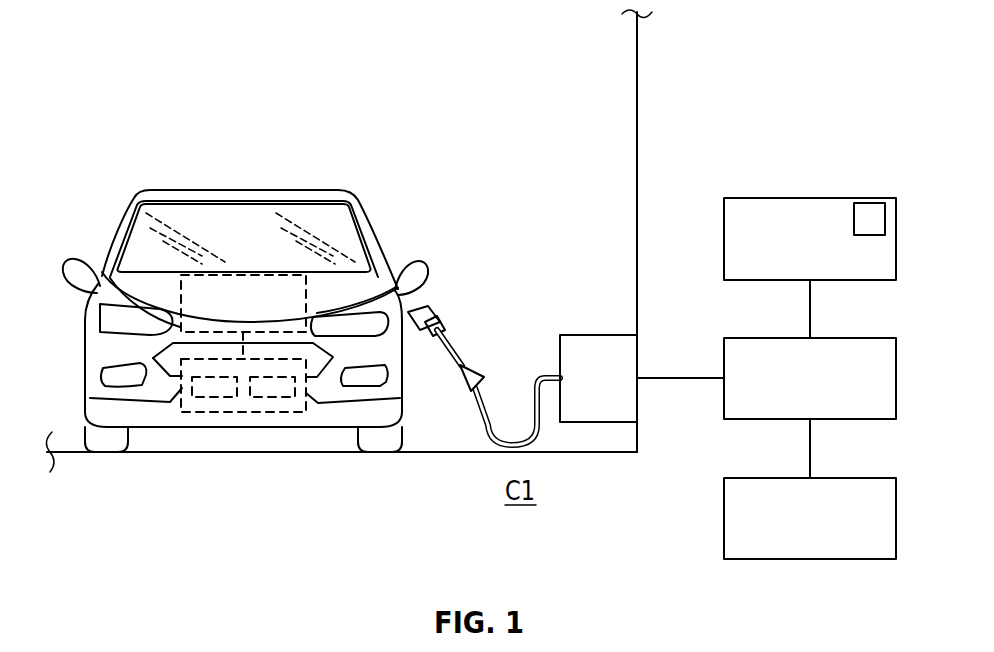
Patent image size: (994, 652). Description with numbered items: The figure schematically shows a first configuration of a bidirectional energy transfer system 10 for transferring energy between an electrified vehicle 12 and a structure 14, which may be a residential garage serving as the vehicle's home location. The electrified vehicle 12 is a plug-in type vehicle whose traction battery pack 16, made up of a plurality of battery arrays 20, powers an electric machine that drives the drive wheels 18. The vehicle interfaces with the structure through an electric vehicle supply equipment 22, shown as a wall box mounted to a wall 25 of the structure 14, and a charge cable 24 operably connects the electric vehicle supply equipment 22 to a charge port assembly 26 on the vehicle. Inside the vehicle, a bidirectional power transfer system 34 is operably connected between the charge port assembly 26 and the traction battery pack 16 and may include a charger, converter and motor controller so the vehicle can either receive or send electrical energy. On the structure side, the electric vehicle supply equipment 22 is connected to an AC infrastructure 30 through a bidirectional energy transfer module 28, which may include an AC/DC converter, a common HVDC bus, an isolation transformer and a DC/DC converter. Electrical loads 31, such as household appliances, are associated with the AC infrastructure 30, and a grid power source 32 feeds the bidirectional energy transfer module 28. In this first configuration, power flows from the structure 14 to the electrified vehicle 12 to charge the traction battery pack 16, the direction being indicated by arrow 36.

The bidirectional energy transfer system 10 is at (182, 38).
The electrified vehicle 12 is at (258, 150).
The structure 14 is at (636, 122).
The traction battery pack 16 is at (227, 412).
The drive wheels 18 is at (108, 444).
The battery arrays 20 is at (197, 400).
The electric vehicle supply equipment (EVSE) 22 is at (588, 334).
The charge cable 24 is at (496, 430).
The wall 25 is at (637, 190).
The charge port assembly 26 is at (423, 298).
The bidirectional energy transfer module 28 is at (778, 338).
The AC infrastructure 30 is at (778, 198).
The electrical loads 31 is at (870, 203).
The grid power source 32 is at (778, 478).
The bidirectional power transfer system 34 is at (233, 275).
The arrow 36 is at (472, 368).